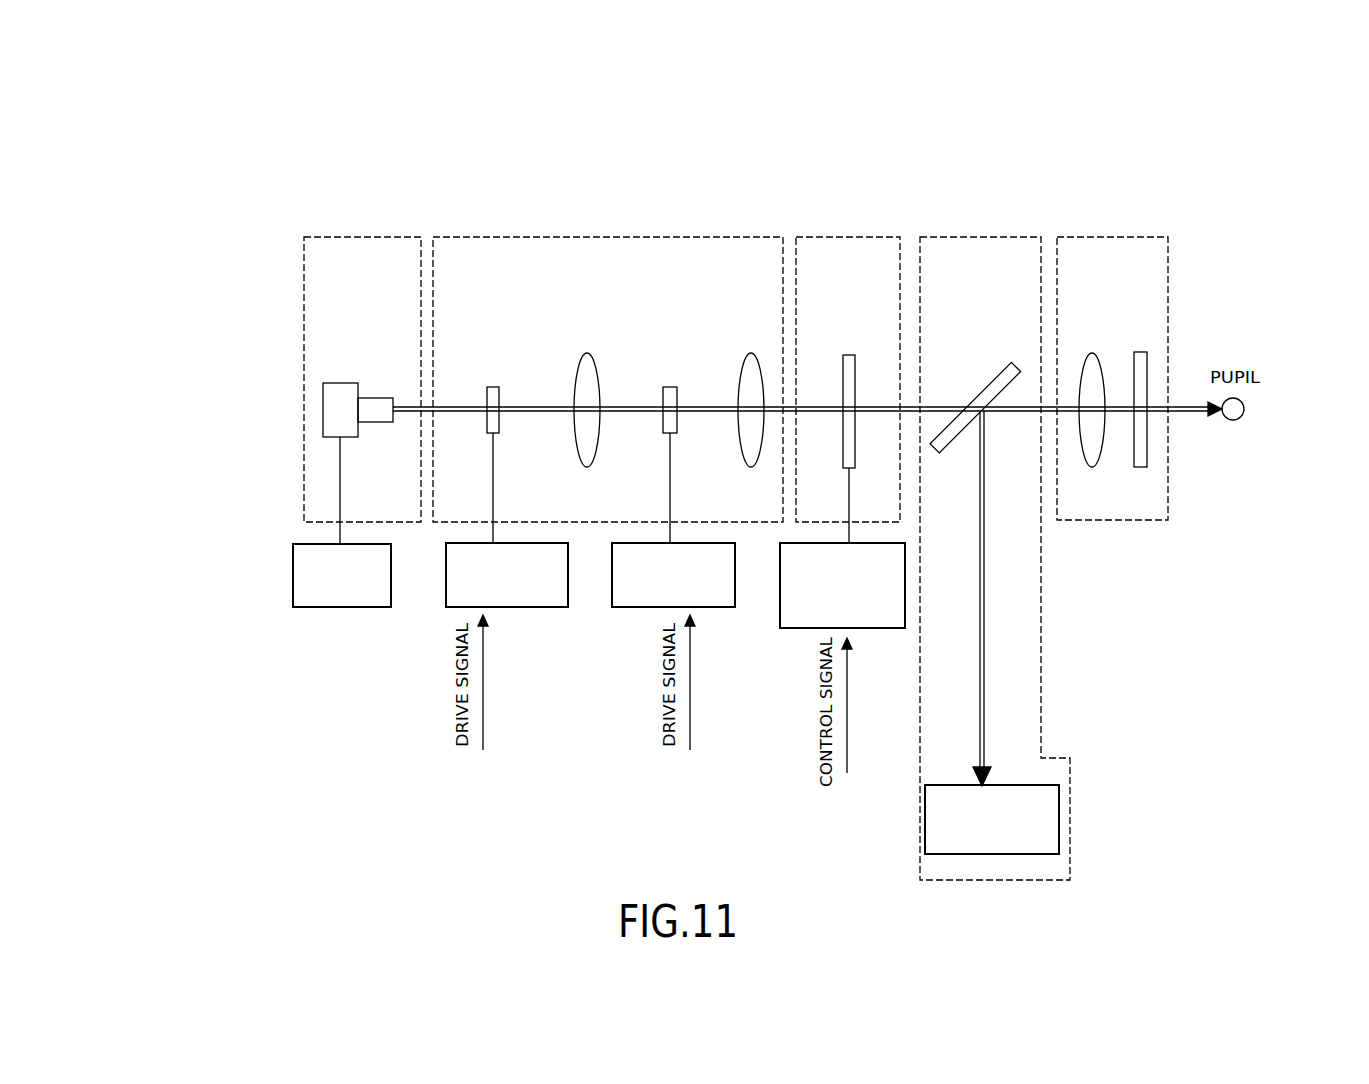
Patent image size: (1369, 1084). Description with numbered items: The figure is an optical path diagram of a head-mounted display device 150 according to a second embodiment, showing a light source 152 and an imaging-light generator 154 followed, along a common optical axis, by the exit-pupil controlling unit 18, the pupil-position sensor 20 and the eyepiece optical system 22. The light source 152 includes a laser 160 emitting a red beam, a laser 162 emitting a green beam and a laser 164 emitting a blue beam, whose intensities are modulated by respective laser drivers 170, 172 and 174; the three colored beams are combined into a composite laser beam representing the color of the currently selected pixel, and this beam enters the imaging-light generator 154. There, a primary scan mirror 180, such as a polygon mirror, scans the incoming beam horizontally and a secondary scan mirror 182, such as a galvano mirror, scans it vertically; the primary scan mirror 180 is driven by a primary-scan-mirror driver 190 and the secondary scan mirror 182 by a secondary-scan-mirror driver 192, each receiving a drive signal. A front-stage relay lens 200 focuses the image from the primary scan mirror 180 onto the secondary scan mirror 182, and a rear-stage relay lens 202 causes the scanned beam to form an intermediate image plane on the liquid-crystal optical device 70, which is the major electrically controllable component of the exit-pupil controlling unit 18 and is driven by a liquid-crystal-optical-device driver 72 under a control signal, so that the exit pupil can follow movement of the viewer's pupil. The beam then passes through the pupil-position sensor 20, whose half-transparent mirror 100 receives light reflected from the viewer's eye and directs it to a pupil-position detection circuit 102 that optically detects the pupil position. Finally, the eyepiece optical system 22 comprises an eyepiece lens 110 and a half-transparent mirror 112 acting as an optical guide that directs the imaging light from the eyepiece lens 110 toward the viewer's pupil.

The head-mounted display device 150 is at (1188, 118).
The light source 152 is at (333, 252).
The imaging-light generator 154 is at (508, 257).
The exit-pupil controlling unit 18 is at (809, 236).
The pupil-position sensor 20 is at (943, 237).
The eyepiece optical system 22 is at (1075, 242).
The laser 160 is at (362, 428).
The laser 162 is at (362, 428).
The laser 164 is at (338, 388).
The laser driver 170 is at (273, 575).
The laser driver 172 is at (273, 575).
The laser driver 174 is at (297, 556).
The primary scan mirror 180 is at (490, 398).
The secondary scan mirror 182 is at (665, 398).
The front-stage relay lens 200 is at (585, 367).
The rear-stage relay lens 202 is at (750, 367).
The liquid-crystal optical device 70 is at (847, 373).
The half-transparent mirror 100 is at (997, 383).
The eyepiece lens 110 is at (1090, 367).
The half-transparent mirror 112 is at (1142, 359).
The primary-scan-mirror driver 190 is at (446, 580).
The secondary-scan-mirror driver 192 is at (612, 580).
The liquid-crystal-optical-device driver 72 is at (780, 569).
The pupil-position detection circuit 102 is at (942, 785).